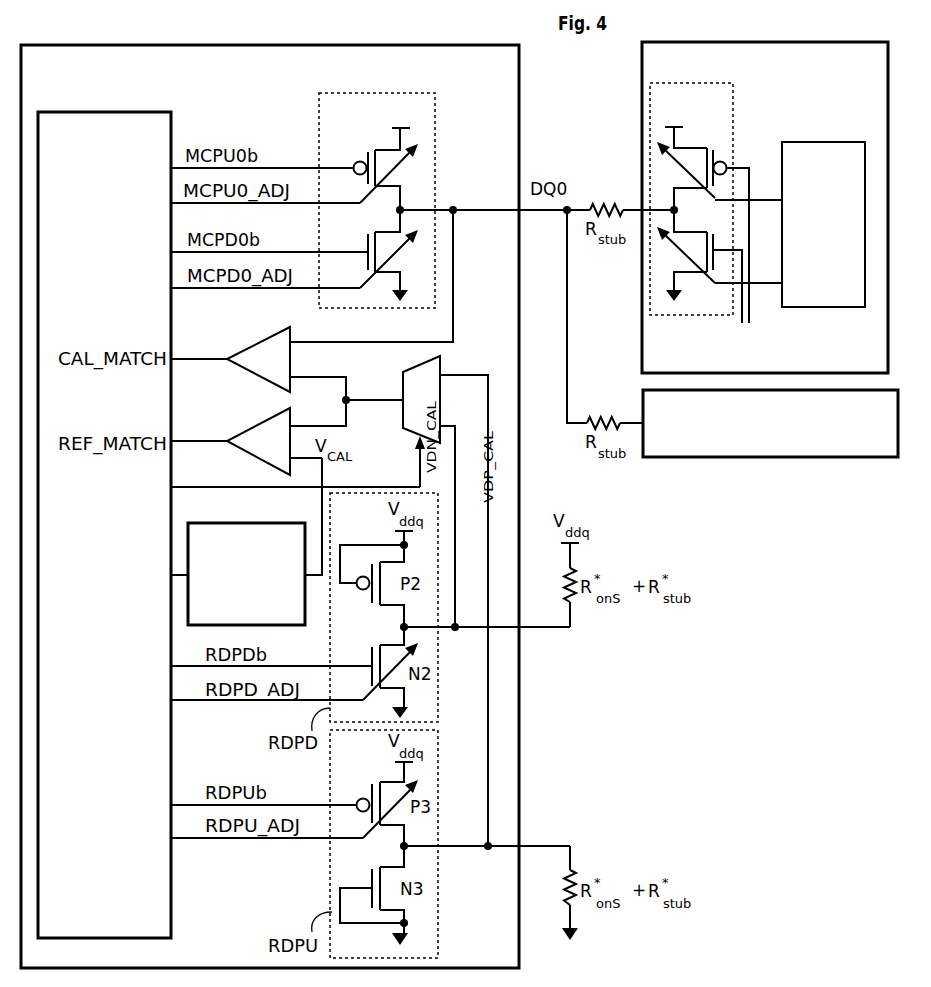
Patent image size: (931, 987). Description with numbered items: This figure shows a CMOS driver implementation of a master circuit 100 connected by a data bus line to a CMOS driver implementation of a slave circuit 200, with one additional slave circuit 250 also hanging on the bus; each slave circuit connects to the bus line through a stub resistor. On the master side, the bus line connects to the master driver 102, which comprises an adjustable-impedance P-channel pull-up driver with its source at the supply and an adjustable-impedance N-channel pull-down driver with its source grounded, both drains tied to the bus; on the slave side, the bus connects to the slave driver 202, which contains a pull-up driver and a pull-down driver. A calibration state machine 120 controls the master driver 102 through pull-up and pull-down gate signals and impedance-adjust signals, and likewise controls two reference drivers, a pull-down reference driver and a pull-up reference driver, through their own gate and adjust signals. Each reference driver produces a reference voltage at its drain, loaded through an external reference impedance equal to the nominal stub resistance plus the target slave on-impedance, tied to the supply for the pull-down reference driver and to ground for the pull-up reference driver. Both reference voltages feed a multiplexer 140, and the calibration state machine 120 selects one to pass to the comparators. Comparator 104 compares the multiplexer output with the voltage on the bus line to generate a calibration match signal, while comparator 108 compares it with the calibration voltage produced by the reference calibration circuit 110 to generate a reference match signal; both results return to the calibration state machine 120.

The master circuit 100 is at (270, 506).
The master driver 102 is at (402, 93).
The comparator 104 is at (286, 376).
The comparator 108 is at (274, 441).
The reference calibration circuit 110 is at (246, 574).
The calibration state machine 120 is at (104, 525).
The multiplexer 140 is at (421, 421).
The slave circuit 200 is at (765, 207).
The slave driver 202 is at (733, 112).
The additional slave circuit 250 is at (770, 423).